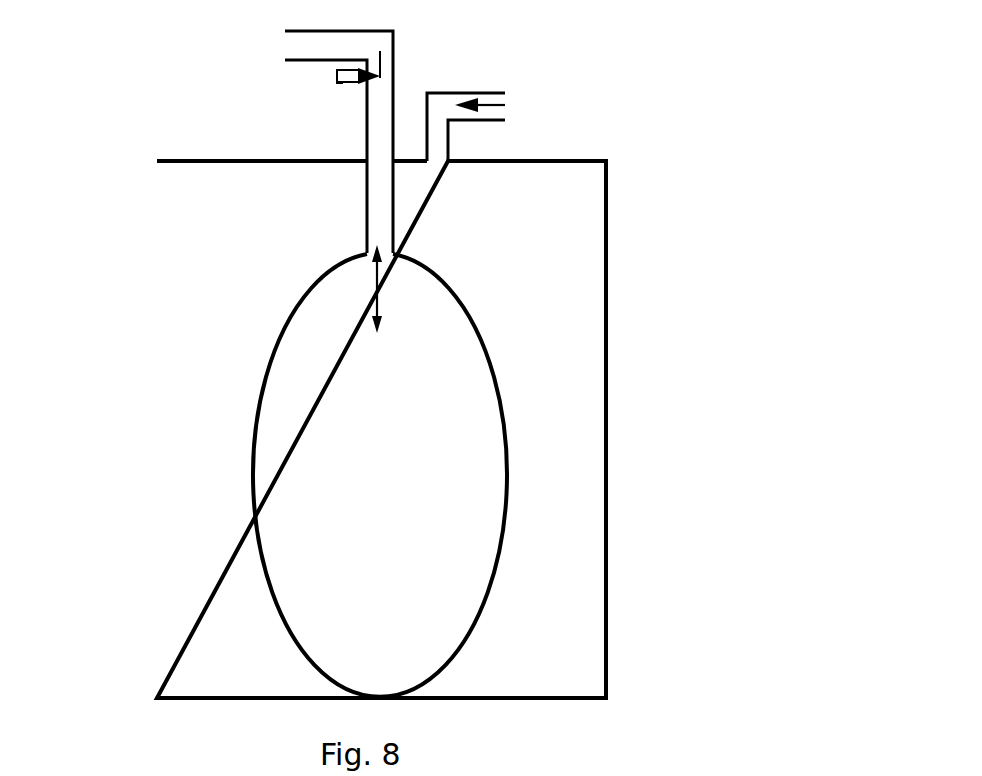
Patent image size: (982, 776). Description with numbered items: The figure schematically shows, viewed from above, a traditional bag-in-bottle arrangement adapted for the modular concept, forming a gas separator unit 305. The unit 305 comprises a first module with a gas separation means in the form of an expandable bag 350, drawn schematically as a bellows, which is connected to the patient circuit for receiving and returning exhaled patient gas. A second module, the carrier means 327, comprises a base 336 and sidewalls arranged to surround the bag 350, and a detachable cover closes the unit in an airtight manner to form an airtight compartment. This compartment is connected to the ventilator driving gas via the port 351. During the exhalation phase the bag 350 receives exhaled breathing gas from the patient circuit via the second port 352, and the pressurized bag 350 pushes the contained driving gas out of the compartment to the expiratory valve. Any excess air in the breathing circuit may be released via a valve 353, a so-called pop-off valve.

The unit 305 is at (542, 108).
The carrier means 327 is at (209, 163).
The base 336 is at (518, 240).
The expandable bag 350 is at (280, 340).
The port 351 is at (433, 161).
The second port 352 is at (367, 160).
The valve 353 is at (337, 87).